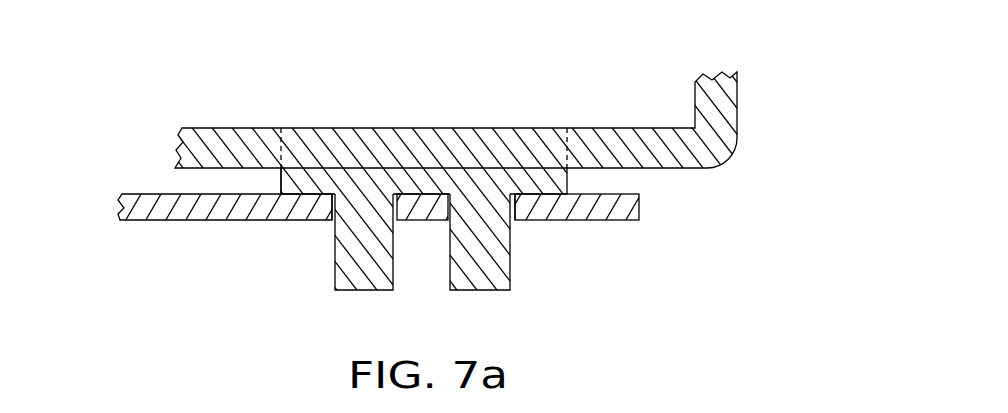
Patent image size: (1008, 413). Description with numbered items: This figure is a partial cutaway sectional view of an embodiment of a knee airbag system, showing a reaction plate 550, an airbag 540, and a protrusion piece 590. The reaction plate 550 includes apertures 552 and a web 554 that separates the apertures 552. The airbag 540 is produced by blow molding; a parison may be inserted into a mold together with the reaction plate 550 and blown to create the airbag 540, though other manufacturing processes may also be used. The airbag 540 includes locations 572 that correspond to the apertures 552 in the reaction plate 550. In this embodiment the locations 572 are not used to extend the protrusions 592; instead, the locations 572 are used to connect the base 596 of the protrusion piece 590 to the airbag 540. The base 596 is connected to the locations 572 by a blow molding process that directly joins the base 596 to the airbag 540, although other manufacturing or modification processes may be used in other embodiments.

The airbag 540 is at (743, 150).
The reaction plate 550 is at (648, 210).
The apertures 552 is at (338, 214).
The web 554 is at (419, 213).
The locations 572 is at (572, 151).
The protrusion piece 590 is at (362, 191).
The protrusions 592 is at (333, 277).
The base 596 is at (280, 180).